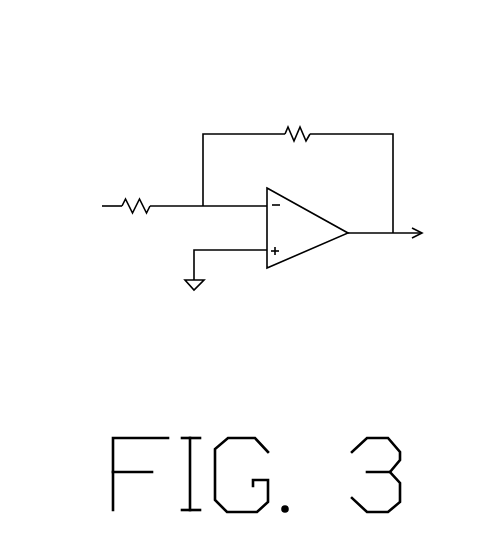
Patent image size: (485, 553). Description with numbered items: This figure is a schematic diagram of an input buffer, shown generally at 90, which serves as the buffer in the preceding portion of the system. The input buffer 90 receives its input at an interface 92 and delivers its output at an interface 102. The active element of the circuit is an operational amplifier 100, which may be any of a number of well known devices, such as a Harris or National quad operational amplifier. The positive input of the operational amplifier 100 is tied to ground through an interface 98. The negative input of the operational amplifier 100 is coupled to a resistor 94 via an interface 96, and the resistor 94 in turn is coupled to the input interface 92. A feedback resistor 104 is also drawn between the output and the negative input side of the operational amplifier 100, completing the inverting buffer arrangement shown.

The input buffer 90 is at (238, 161).
The interface 92 is at (92, 182).
The resistor 94 is at (141, 183).
The interface 96 is at (208, 182).
The interface 98 is at (197, 261).
The operational amplifier 100 is at (307, 247).
The interface 102 is at (396, 256).
The feedback resistor 104 is at (298, 154).